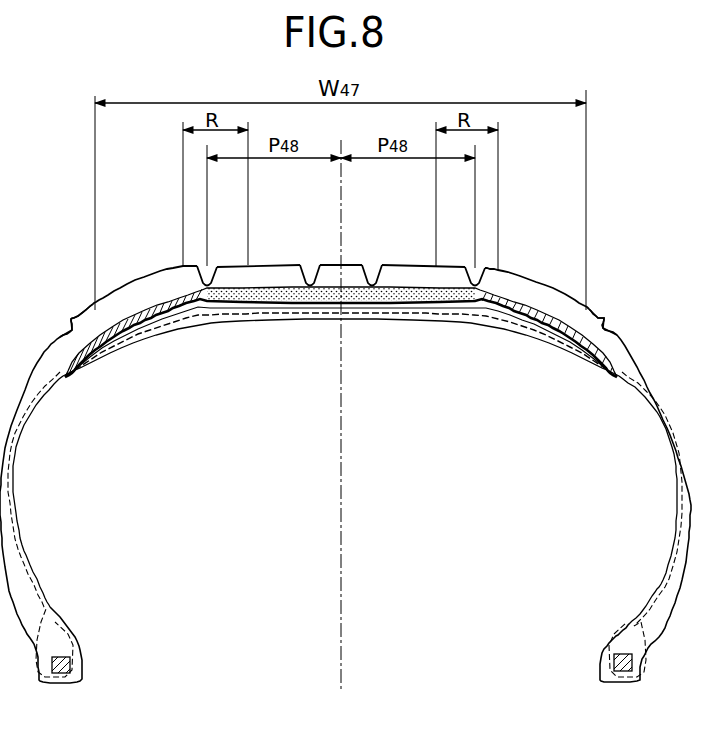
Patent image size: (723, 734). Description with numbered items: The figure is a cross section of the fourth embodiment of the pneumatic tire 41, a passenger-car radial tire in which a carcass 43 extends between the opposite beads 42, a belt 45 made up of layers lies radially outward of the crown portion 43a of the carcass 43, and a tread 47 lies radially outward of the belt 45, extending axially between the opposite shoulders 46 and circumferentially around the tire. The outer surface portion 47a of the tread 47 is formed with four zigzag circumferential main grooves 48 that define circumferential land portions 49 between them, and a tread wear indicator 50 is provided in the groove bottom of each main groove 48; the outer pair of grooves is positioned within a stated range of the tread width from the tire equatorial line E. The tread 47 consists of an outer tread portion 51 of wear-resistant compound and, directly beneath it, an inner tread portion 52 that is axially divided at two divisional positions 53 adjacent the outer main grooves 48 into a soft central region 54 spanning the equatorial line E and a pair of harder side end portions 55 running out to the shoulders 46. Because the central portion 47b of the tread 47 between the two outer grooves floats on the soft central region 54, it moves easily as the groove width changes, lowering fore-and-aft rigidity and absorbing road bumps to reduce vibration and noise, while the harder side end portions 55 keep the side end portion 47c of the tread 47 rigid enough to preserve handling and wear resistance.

The pneumatic tire 41 is at (467, 213).
The bead 42 is at (70, 663).
The carcass 43 is at (37, 412).
The crown portion 43a is at (605, 380).
The belt 45 is at (315, 310).
The shoulder 46 is at (96, 305).
The tread 47 is at (328, 236).
The outer surface portion 47a is at (518, 282).
The central portion 47b is at (472, 198).
The side end portion 47c is at (206, 198).
The circumferential main groove 48 is at (208, 270).
The circumferential land portion 49 is at (323, 266).
The tread wear indicator 50 is at (379, 280).
The outer tread portion 51 is at (240, 265).
The inner tread portion 52 is at (175, 282).
The divisional position 53 is at (197, 272).
The central region 54 is at (273, 278).
The side end portion 55 is at (145, 297).
The tire equatorial line E is at (343, 345).